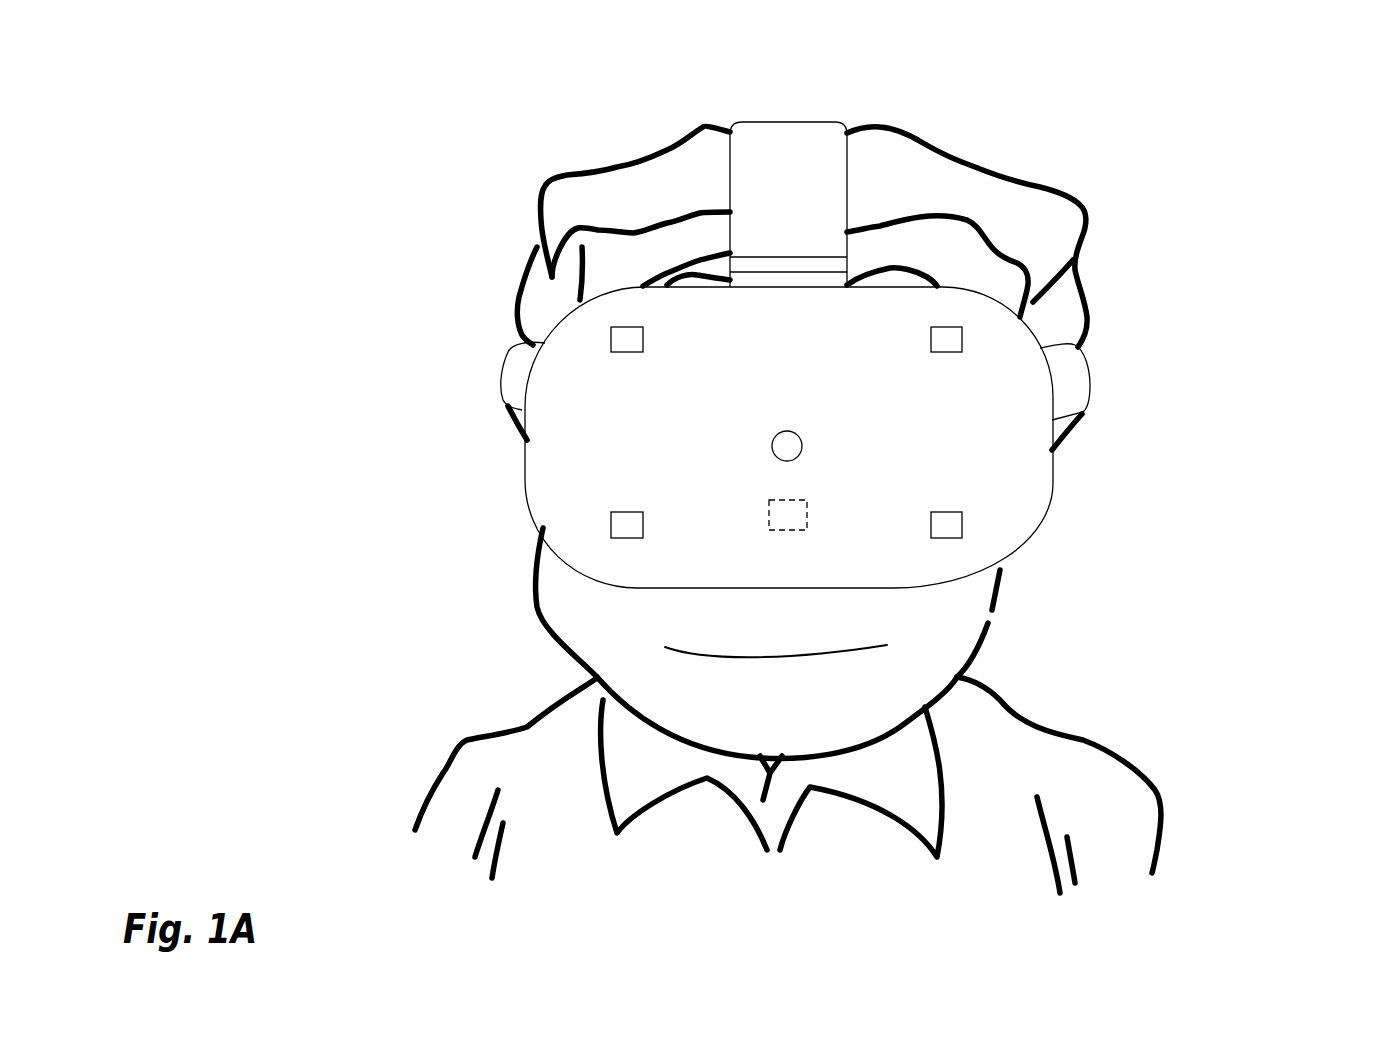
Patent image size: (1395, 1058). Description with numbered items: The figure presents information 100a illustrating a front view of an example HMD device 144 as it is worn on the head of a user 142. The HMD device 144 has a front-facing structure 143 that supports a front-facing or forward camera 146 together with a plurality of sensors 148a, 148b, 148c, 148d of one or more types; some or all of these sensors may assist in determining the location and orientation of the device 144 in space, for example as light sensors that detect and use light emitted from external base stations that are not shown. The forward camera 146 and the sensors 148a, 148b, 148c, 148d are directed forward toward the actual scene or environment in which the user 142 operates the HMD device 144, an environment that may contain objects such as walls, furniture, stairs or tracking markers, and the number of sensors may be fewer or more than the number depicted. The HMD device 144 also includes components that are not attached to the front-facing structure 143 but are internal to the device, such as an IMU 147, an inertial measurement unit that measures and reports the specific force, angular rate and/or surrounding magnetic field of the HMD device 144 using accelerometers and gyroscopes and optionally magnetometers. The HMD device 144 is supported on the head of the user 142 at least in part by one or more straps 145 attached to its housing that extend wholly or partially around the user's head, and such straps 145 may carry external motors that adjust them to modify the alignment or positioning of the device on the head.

The information 100a is at (1287, 115).
The user 142 is at (1103, 745).
The front-facing structure 143 is at (557, 495).
The HMD device 144 is at (1050, 502).
The straps 145 is at (785, 121).
The forward camera 146 is at (802, 440).
The IMU electronic device 147 is at (807, 500).
The sensor 148a is at (643, 352).
The sensor 148b is at (643, 512).
The sensor 148c is at (937, 352).
The sensor 148d is at (937, 512).